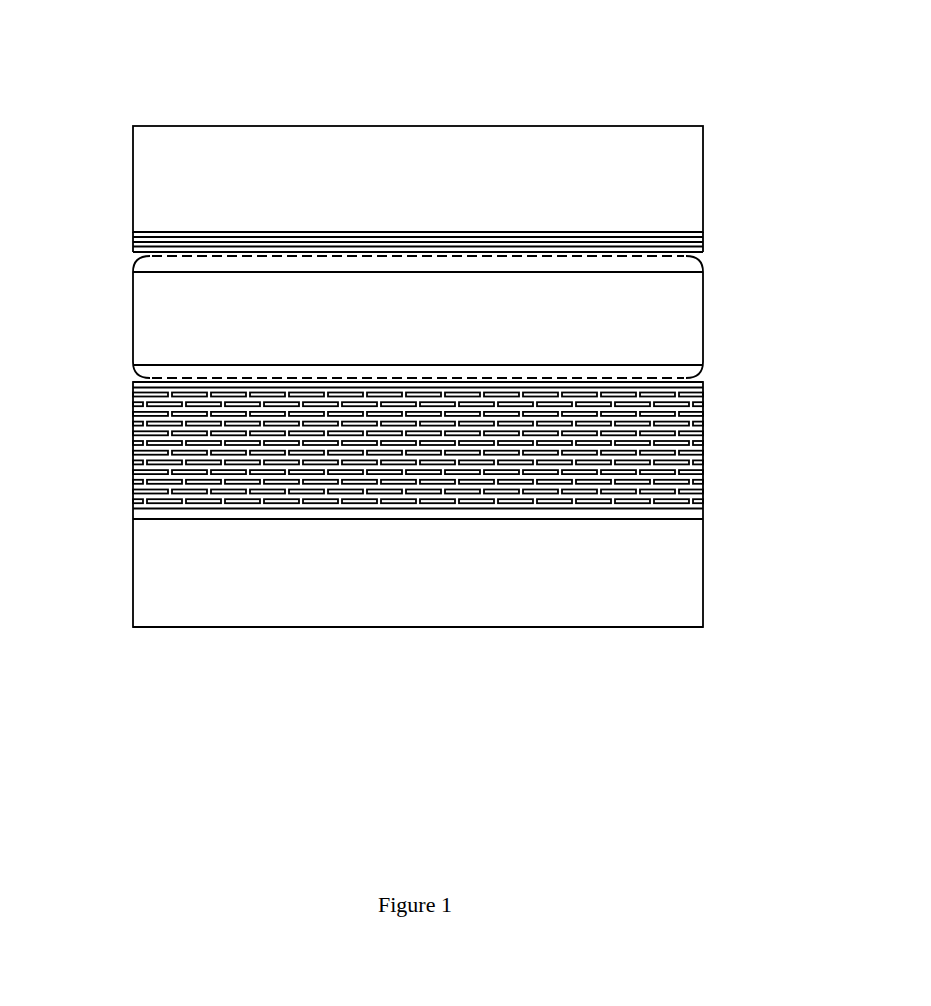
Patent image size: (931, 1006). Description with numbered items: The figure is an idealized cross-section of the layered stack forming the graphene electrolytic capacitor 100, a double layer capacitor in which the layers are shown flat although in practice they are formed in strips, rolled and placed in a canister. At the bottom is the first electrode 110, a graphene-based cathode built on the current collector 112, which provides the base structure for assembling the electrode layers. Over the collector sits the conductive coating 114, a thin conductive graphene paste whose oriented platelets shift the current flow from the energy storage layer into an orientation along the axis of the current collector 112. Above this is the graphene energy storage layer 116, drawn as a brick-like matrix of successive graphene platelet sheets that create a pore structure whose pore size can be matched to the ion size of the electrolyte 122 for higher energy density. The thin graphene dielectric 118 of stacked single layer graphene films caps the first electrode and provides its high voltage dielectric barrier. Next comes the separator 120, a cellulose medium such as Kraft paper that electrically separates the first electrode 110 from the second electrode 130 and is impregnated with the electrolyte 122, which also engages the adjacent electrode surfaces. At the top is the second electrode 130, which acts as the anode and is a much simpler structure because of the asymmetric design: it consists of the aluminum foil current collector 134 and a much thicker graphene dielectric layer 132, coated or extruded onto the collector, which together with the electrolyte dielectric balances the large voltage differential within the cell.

The graphene electrolytic capacitor 100 is at (100, 73).
The first electrode 110 is at (737, 381).
The current collector 112 is at (133, 577).
The conductive coating 114 is at (133, 511).
The graphene energy storage layer 116 is at (133, 445).
The graphene dielectric 118 is at (133, 388).
The separator 120 is at (133, 335).
The electrolyte 122 is at (133, 263).
The second electrode 130 is at (737, 124).
The graphene dielectric layer 132 is at (133, 232).
The current collector 134 is at (133, 157).